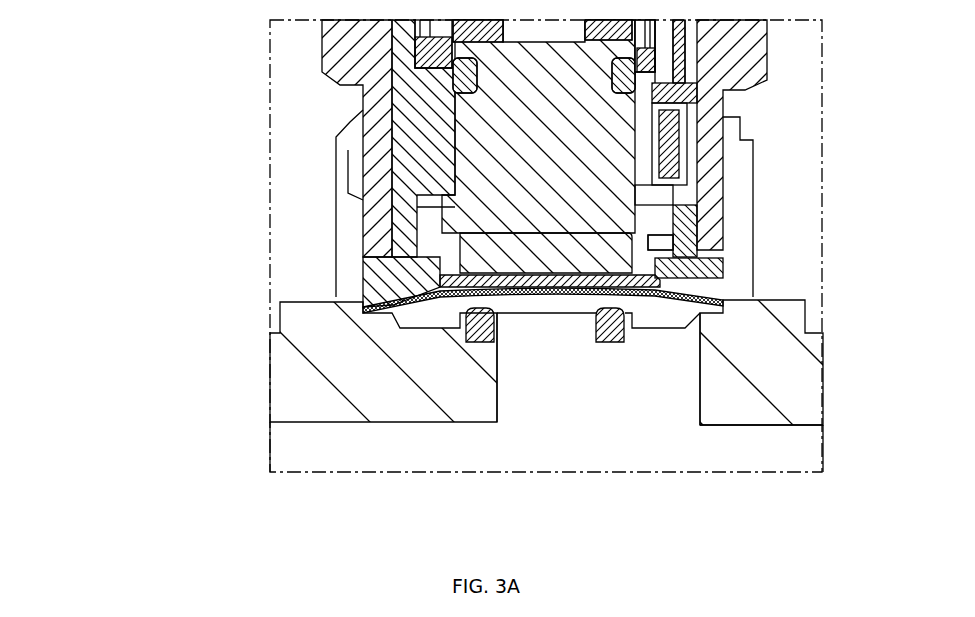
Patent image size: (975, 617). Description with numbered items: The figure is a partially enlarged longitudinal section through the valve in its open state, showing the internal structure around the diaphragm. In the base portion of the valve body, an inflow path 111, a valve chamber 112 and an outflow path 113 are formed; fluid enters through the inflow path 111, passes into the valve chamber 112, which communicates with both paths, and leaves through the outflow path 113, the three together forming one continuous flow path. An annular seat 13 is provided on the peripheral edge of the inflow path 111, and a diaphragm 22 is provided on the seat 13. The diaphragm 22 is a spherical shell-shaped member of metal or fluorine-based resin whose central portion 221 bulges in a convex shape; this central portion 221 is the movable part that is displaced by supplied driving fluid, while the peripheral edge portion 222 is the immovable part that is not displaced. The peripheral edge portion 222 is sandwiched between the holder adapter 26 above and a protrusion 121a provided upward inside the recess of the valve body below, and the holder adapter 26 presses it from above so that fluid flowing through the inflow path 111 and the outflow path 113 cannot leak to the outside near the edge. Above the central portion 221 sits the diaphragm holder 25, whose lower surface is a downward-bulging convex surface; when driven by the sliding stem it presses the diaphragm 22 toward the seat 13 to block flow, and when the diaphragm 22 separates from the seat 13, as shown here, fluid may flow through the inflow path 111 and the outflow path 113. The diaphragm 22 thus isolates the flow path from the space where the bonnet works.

The diaphragm holder 25 is at (467, 240).
The holder adapter 26 is at (377, 278).
The diaphragm 22 is at (370, 373).
The peripheral edge portion 222 is at (395, 299).
The central portion 221 is at (433, 300).
The protrusion 121a is at (387, 303).
The inflow path 111 is at (547, 453).
The valve chamber 112 is at (675, 311).
The outflow path 113 is at (770, 447).
The seat 13 is at (610, 343).